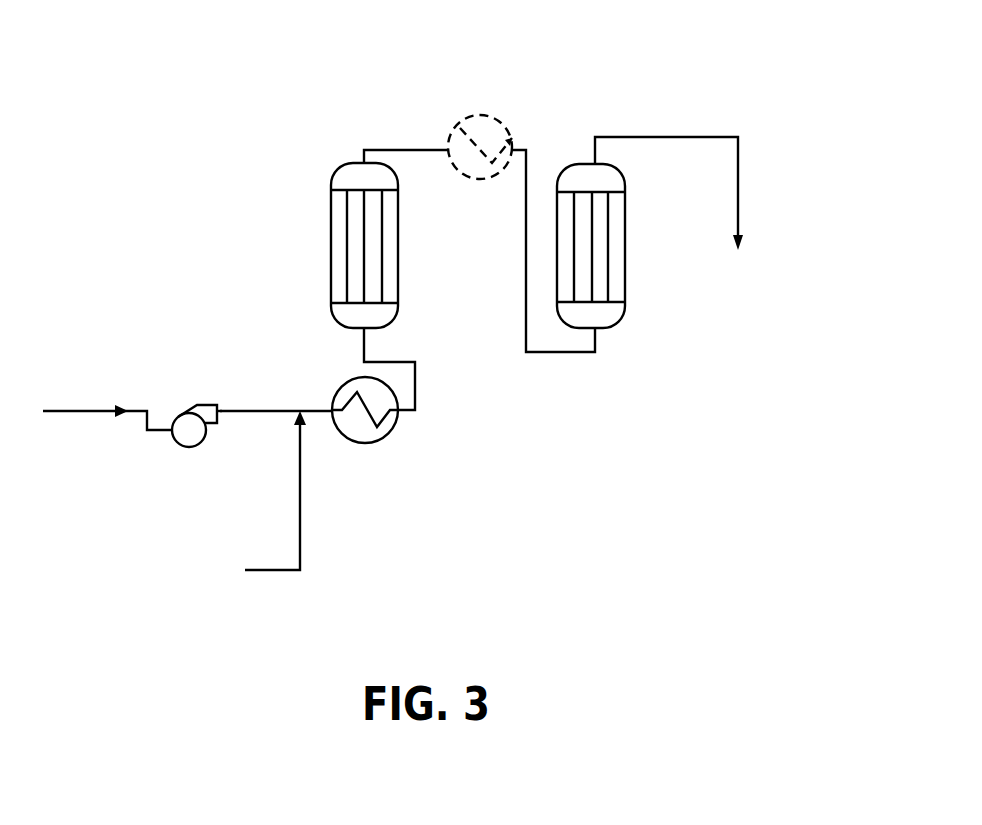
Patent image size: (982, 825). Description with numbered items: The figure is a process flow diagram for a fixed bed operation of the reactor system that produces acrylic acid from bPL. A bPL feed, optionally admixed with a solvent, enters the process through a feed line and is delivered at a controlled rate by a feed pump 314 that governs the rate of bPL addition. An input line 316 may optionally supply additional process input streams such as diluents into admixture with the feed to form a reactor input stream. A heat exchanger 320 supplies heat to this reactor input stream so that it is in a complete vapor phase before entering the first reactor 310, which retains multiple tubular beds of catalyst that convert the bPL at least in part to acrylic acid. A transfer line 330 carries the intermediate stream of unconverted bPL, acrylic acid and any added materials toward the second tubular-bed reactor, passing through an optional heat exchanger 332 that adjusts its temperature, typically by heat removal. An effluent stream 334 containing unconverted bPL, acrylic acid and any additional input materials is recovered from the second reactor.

The reactor 310 is at (331, 242).
The feed pump 314 is at (197, 405).
The input line 316 is at (300, 523).
The heat exchanger 320 is at (390, 433).
The transfer line 330 is at (400, 150).
The heat exchanger 332 is at (468, 178).
The effluent stream 334 is at (682, 137).